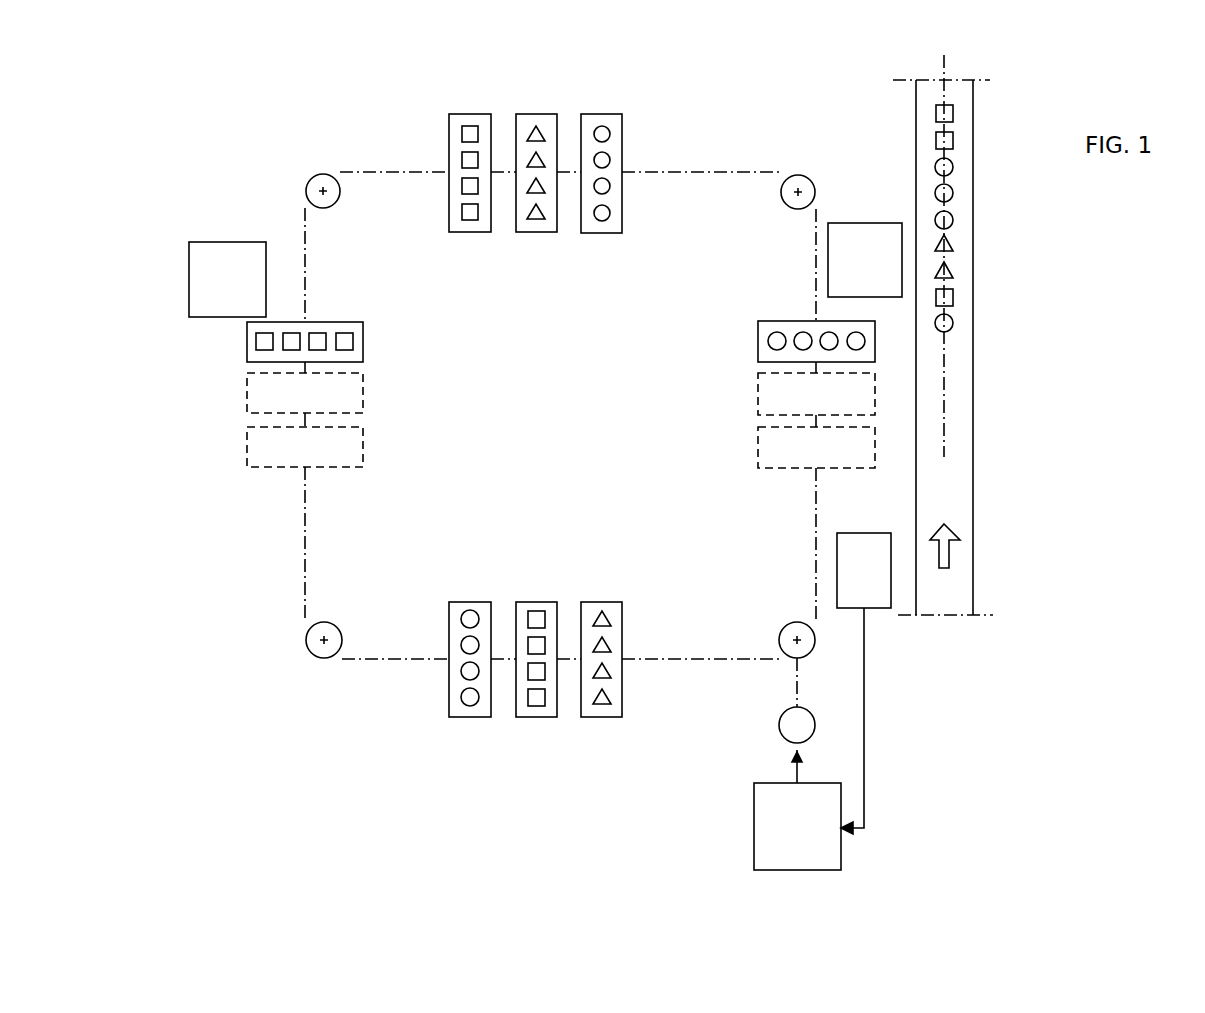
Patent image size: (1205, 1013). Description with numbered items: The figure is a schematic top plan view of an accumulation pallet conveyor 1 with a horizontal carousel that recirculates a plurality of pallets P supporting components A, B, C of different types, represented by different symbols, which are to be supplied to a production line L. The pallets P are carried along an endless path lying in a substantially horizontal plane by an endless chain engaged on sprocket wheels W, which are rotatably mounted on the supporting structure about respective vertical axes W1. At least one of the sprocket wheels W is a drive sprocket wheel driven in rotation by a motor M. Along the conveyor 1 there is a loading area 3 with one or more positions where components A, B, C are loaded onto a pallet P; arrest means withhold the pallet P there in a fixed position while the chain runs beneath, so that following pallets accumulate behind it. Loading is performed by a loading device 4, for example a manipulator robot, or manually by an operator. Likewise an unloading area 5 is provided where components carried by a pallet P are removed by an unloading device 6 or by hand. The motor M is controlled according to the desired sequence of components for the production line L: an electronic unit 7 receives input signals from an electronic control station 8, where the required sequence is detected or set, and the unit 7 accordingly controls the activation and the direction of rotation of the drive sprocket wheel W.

The accumulation pallet conveyor 1 is at (243, 93).
The loading area 3 is at (263, 502).
The loading device 4 is at (217, 242).
The unloading area 5 is at (790, 312).
The unloading device 6 is at (863, 232).
The electronic unit 7 is at (763, 837).
The electronic control station 8 is at (873, 597).
The sprocket wheel W is at (338, 205).
The vertical axis W1 is at (323, 191).
The motor M is at (787, 730).
The pallet P is at (457, 104).
The component A is at (463, 162).
The component B is at (540, 215).
The component C is at (602, 213).
The production line L is at (960, 432).